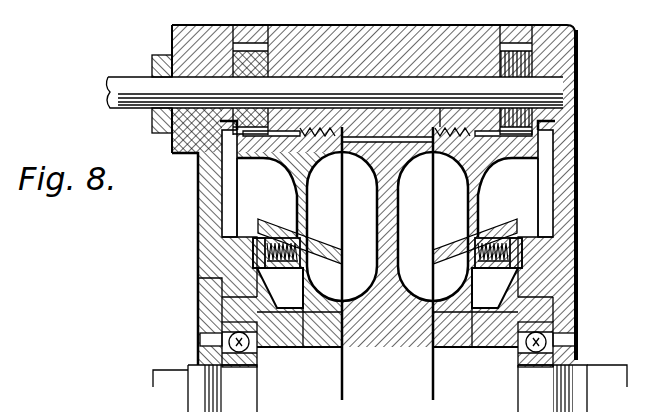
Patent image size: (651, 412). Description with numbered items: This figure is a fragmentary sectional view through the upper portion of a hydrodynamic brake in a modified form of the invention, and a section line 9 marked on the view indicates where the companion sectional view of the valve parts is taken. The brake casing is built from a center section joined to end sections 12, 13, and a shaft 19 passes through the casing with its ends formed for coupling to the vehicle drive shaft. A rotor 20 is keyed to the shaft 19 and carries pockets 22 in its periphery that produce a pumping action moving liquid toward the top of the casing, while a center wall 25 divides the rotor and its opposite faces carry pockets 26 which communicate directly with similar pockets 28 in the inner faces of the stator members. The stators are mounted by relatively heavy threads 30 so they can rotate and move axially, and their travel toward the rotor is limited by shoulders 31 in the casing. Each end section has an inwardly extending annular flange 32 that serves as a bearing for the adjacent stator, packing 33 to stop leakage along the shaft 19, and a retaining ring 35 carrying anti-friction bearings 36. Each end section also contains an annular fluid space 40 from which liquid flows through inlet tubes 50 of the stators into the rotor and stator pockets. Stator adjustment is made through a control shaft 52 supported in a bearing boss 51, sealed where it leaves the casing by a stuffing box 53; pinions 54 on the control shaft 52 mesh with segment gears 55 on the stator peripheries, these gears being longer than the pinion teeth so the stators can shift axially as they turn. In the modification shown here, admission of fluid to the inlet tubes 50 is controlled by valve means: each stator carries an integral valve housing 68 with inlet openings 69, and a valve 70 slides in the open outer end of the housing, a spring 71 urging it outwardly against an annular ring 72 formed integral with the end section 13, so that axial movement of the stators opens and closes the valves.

The housing 9 is at (422, 219).
The end section 12 is at (197, 213).
The end section 13 is at (578, 170).
The shaft 19 is at (175, 378).
The rotor 20 is at (385, 328).
The pockets 22 is at (358, 155).
The center wall 25 is at (430, 157).
The pockets 26 is at (387, 231).
The pockets 28 is at (387, 282).
The threads 30 is at (314, 130).
The shoulders 31 is at (350, 130).
The annular flange 32 is at (312, 348).
The packing 33 is at (278, 345).
The retaining ring 35 is at (200, 303).
The anti-friction bearings 36 is at (254, 352).
The fluid space 40 is at (228, 176).
The inlet tubes 50 is at (327, 230).
The bearing boss 51 is at (438, 54).
The control shaft 52 is at (123, 82).
The stuffing box 53 is at (156, 56).
The pinions 54 is at (248, 76).
The segment gear 55 is at (249, 156).
The valve housing 68 is at (270, 237).
The inlet openings 69 is at (283, 239).
The valve 70 is at (292, 238).
The spring 71 is at (291, 268).
The annular ring 72 is at (252, 255).